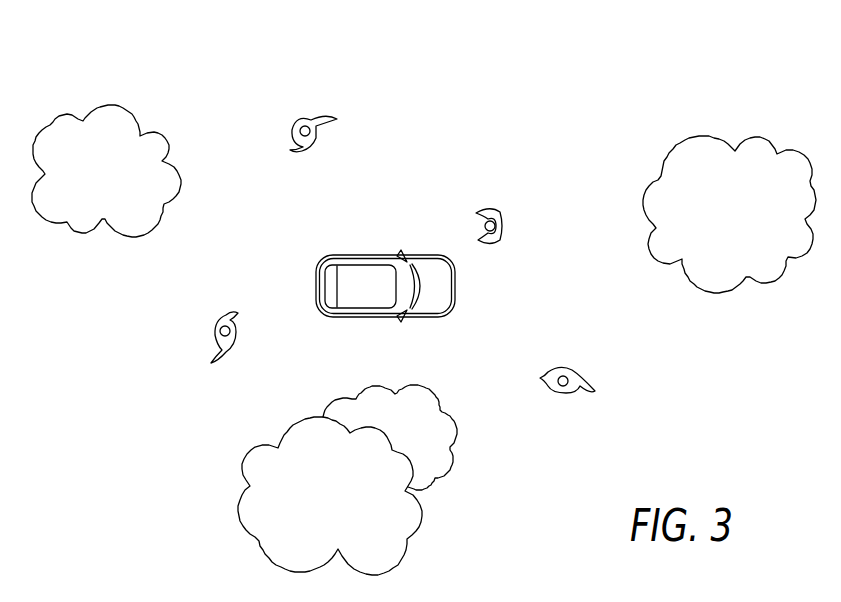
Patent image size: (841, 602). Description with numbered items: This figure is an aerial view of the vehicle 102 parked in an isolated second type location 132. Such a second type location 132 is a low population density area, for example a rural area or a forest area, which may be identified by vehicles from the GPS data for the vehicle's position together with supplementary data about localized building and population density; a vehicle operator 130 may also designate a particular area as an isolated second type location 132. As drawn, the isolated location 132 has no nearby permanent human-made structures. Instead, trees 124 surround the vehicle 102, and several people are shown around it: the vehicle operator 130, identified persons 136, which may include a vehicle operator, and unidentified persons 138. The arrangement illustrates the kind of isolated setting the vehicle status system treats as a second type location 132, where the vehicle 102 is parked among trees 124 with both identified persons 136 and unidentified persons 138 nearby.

The vehicle 102 is at (455, 288).
The trees 124 is at (82, 186).
The vehicle operator 130 is at (575, 367).
The isolated second type location 132 is at (326, 221).
The identified persons 136 is at (490, 207).
The unidentified persons 138 is at (308, 112).